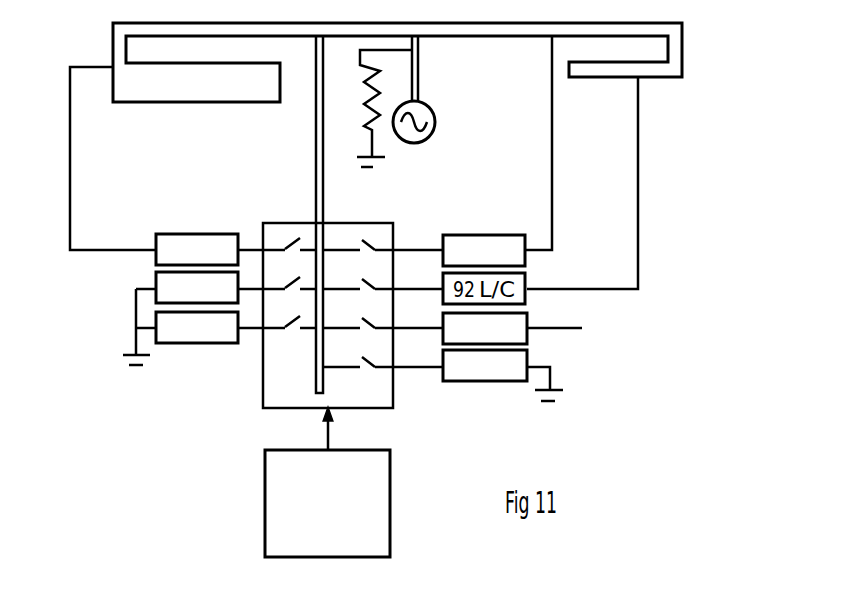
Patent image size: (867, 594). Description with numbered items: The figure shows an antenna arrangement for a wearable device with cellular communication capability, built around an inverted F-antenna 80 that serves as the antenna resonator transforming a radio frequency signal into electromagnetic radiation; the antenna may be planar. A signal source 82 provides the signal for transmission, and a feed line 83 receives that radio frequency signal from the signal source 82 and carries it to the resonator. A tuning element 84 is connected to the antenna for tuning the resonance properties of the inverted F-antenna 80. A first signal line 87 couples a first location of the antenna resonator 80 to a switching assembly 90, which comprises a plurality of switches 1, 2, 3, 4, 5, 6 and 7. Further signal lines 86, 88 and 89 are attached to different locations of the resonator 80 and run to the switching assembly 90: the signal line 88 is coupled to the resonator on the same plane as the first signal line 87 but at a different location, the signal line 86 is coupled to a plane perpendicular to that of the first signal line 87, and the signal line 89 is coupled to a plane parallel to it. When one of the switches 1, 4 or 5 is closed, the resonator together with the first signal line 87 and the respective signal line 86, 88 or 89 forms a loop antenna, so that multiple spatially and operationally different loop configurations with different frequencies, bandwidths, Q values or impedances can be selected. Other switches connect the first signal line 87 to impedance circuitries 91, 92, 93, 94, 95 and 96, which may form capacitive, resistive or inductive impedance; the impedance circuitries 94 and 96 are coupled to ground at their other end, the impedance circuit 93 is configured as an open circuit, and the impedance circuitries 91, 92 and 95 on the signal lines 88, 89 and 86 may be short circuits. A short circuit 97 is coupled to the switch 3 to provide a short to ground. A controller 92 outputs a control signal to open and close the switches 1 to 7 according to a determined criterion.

The inverted F-antenna 80 is at (682, 35).
The signal source 82 is at (436, 118).
The feed line 83 is at (420, 72).
The tuning element 84 is at (362, 108).
The second signal line 86 is at (70, 155).
The first signal line 87 is at (314, 145).
The second signal line 88 is at (551, 165).
The second signal line 89 is at (637, 155).
The switching assembly 90 is at (310, 326).
The impedance circuitry 91 is at (459, 250).
The controller 92 is at (327, 482).
The impedance circuit 93 is at (514, 328).
The impedance circuitry 94 is at (478, 375).
The impedance circuitry 95 is at (209, 249).
The impedance circuitry 96 is at (199, 287).
The short circuit 97 is at (199, 327).
The switch 1 is at (277, 235).
The switch 2 is at (277, 276).
The switch 3 is at (277, 314).
The switch 4 is at (383, 239).
The switch 5 is at (383, 279).
The switch 6 is at (383, 319).
The switch 7 is at (383, 353).